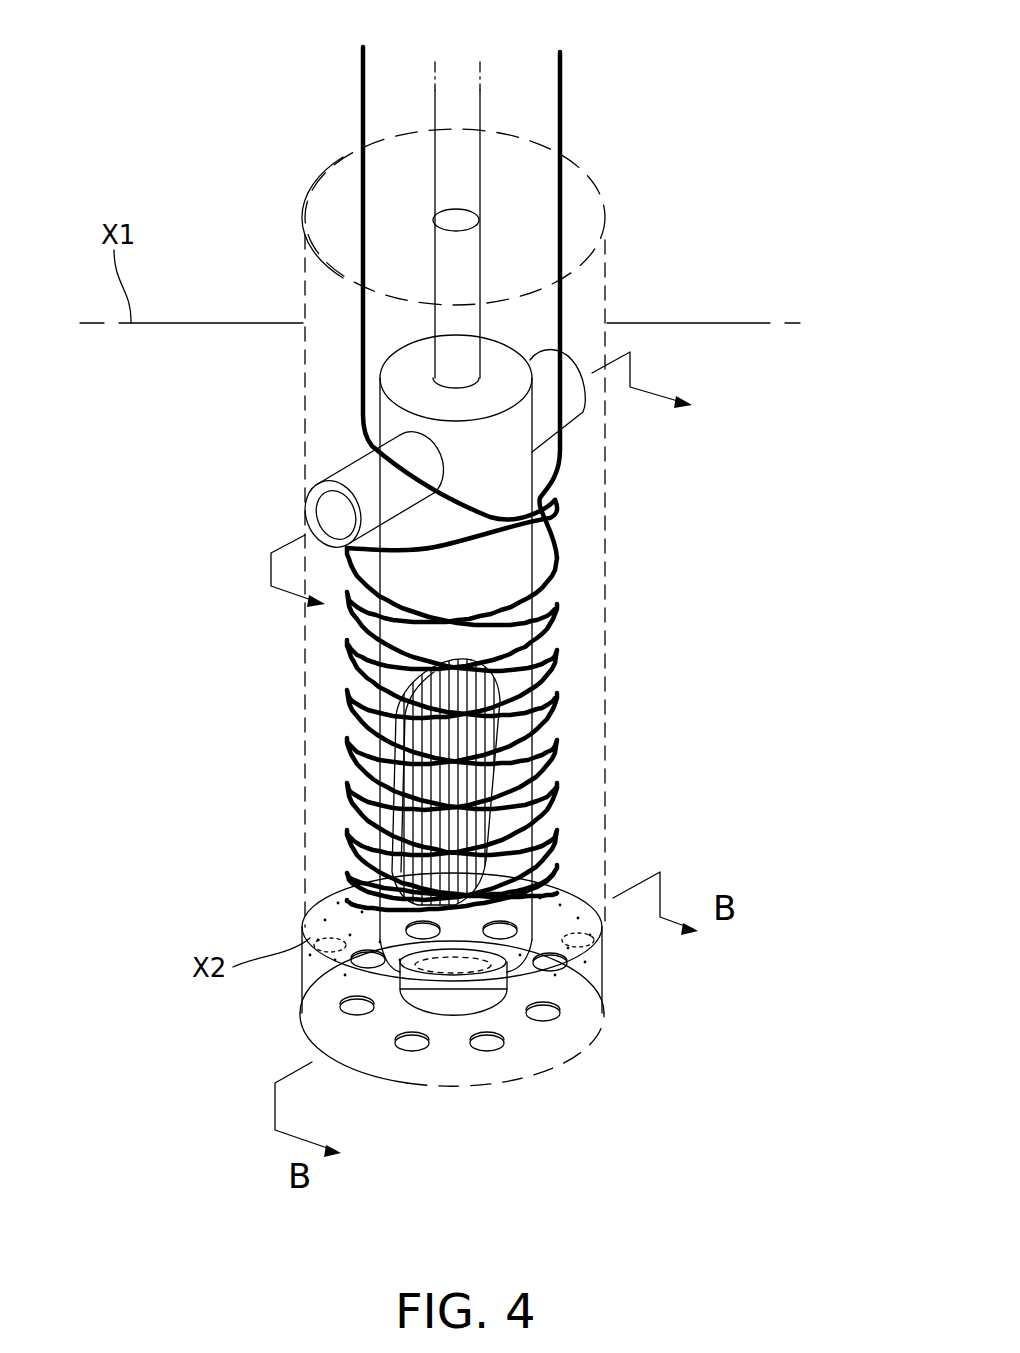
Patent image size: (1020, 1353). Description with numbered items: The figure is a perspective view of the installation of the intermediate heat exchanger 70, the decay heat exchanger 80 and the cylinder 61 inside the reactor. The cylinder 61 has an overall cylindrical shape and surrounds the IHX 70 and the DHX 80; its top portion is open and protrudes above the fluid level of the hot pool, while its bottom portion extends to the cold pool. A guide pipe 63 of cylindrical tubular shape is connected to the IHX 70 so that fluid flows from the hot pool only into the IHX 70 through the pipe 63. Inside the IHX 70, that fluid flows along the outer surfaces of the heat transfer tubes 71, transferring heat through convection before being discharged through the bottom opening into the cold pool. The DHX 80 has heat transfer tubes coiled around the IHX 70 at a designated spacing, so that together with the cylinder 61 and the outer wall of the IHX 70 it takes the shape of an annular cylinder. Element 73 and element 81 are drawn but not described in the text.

The cylinder 61 is at (605, 702).
The guide pipe 63 is at (318, 507).
The intermediate heat exchanger (IHX) 70 is at (492, 547).
The heat transfer tubes 71 is at (417, 756).
The inner tube 73 is at (467, 107).
The decay heat exchanger (DHX) 80 is at (556, 766).
The lead wire 81 is at (562, 113).